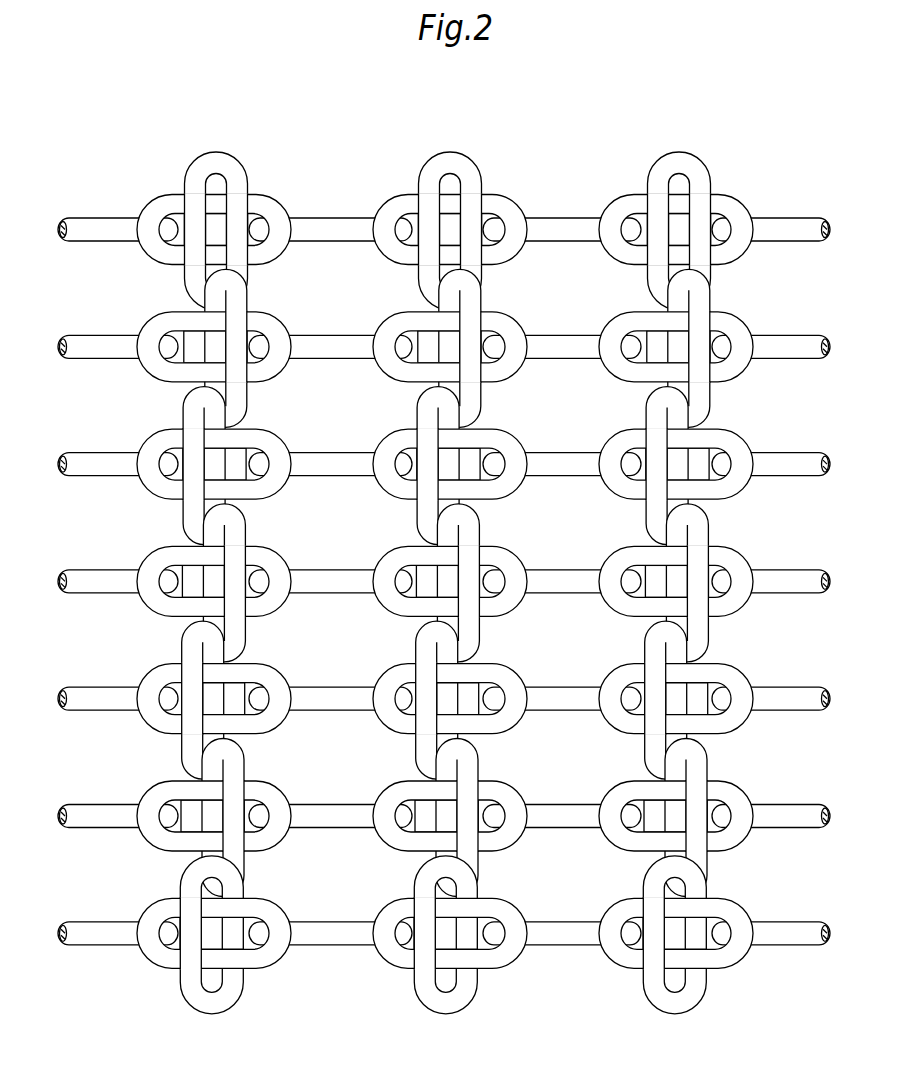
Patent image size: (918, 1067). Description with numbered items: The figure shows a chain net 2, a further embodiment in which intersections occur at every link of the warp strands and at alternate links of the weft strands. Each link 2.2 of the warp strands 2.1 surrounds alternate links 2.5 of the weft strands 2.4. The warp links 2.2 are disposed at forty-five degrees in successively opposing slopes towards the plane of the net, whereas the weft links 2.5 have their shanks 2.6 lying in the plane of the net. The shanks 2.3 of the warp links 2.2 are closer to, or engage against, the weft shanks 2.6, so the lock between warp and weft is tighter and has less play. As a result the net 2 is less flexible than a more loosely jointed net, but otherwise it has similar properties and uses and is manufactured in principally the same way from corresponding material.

The chain net 2 is at (213, 140).
The warp strands 2.1 is at (450, 140).
The warp link 2.2 is at (485, 412).
The shank of warp link 2.3 is at (418, 428).
The weft strands 2.4 is at (822, 210).
The weft link 2.5 is at (747, 368).
The shank of weft link 2.6 is at (615, 318).